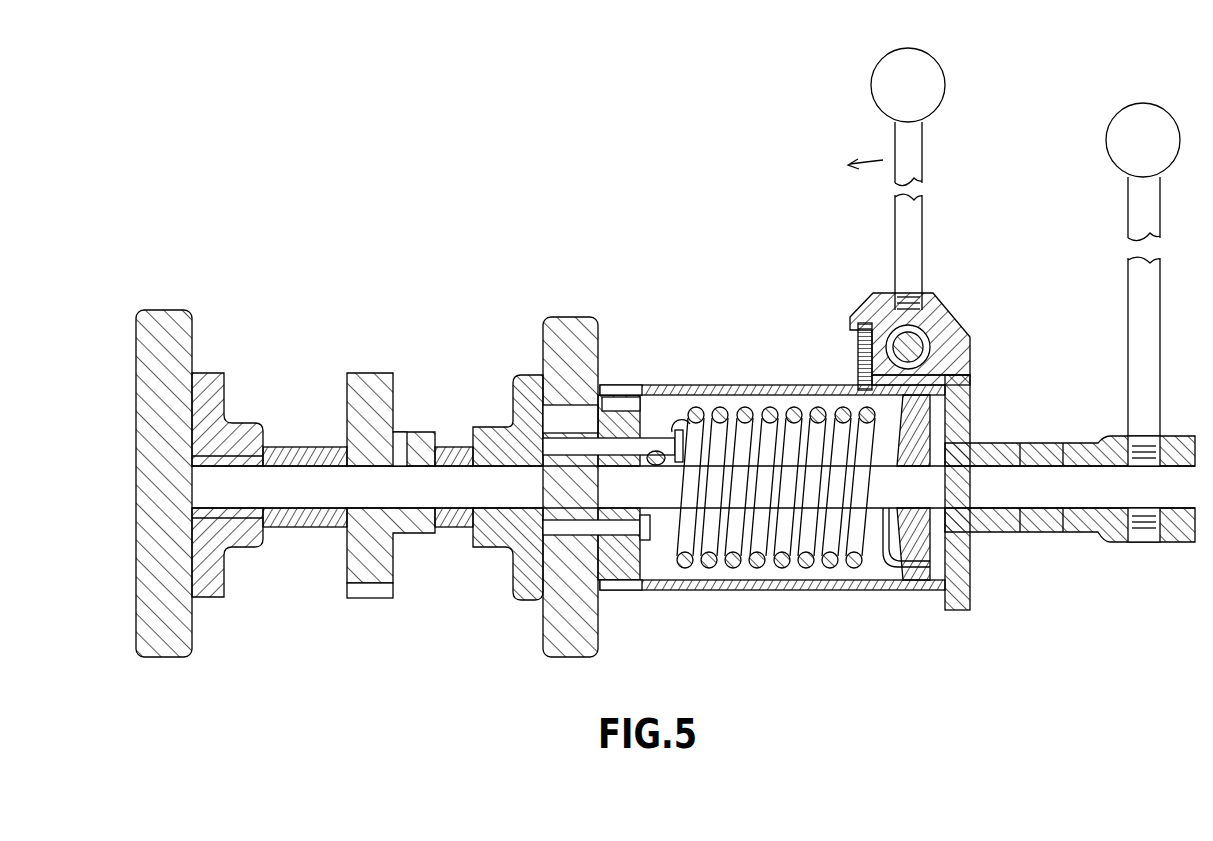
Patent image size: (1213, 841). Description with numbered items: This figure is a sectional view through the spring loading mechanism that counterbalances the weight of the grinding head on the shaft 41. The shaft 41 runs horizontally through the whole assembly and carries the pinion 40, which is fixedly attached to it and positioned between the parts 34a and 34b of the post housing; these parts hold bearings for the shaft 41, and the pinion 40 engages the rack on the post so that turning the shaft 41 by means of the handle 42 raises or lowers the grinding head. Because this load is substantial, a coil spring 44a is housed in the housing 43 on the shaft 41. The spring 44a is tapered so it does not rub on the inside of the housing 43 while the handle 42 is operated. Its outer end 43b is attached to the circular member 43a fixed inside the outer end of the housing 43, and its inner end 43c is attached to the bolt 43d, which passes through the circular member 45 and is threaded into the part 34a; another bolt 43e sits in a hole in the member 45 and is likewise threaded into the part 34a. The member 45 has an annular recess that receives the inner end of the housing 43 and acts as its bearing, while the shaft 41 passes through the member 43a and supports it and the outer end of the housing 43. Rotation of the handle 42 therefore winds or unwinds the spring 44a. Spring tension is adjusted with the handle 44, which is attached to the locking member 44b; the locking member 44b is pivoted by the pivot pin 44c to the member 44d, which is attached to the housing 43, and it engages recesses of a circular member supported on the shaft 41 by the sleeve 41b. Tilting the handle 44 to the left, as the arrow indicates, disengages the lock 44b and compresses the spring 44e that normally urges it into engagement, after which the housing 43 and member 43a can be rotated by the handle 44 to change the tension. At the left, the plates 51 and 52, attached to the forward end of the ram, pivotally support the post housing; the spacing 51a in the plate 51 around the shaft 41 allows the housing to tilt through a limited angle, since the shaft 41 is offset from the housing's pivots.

The part of the housing 34a is at (492, 548).
The part of the housing 34b is at (237, 548).
The pinion 40 is at (350, 388).
The shaft 41 is at (990, 478).
The sleeve 41b is at (1040, 447).
The handle 42 is at (1158, 373).
The housing 43 is at (781, 590).
The circular member 43a is at (925, 548).
The outer end of the coil spring 43b is at (908, 570).
The inner end of the coil spring 43c is at (666, 436).
The bolt 43d is at (620, 446).
The bolt 43e is at (646, 578).
The handle 44 is at (912, 240).
The coil spring 44a is at (768, 410).
The locking member 44b is at (948, 318).
The pivot pin 44c is at (925, 346).
The member 44d is at (950, 381).
The spring 44e is at (858, 350).
The circular member 45 is at (614, 588).
The plate 51 is at (581, 319).
The spacing 51a is at (584, 404).
The plate 52 is at (136, 371).